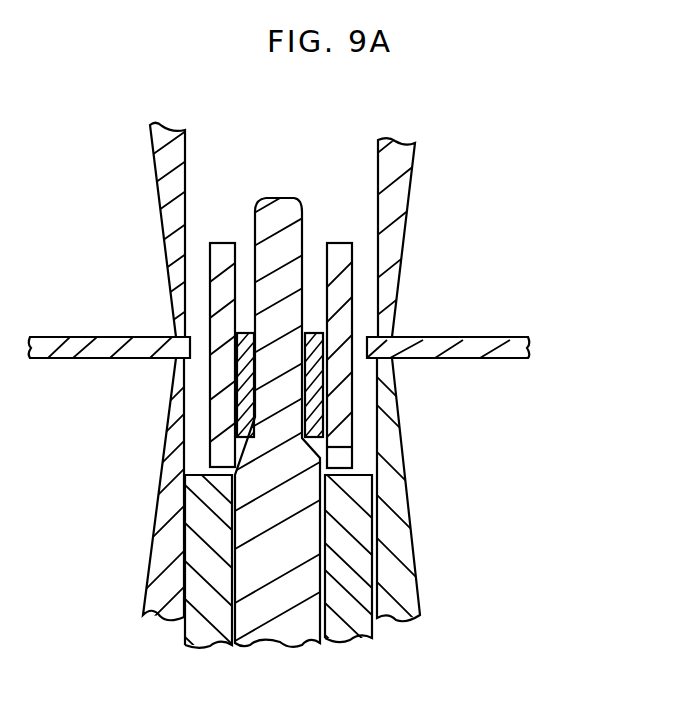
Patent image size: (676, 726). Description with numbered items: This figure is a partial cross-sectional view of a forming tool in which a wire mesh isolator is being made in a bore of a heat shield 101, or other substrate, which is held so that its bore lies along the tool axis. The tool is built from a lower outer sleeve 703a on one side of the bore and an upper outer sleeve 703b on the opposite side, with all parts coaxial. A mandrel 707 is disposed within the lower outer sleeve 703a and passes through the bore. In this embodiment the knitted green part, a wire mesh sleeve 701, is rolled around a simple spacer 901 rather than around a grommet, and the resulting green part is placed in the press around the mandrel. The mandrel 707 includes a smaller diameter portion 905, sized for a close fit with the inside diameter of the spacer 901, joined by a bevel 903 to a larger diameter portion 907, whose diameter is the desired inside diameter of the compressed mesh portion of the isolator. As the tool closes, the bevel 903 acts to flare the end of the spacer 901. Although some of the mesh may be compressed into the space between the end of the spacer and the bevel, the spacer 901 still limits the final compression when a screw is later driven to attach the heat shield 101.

The heat shield 101 is at (80, 362).
The wire mesh sleeve 701 is at (356, 280).
The lower outer sleeve 703a is at (158, 512).
The upper outer sleeve 703b is at (157, 197).
The mandrel 707 is at (278, 196).
The spacer 901 is at (323, 378).
The bevel 903 is at (320, 447).
The smaller diameter portion 905 is at (304, 227).
The larger diameter portion 907 is at (325, 527).